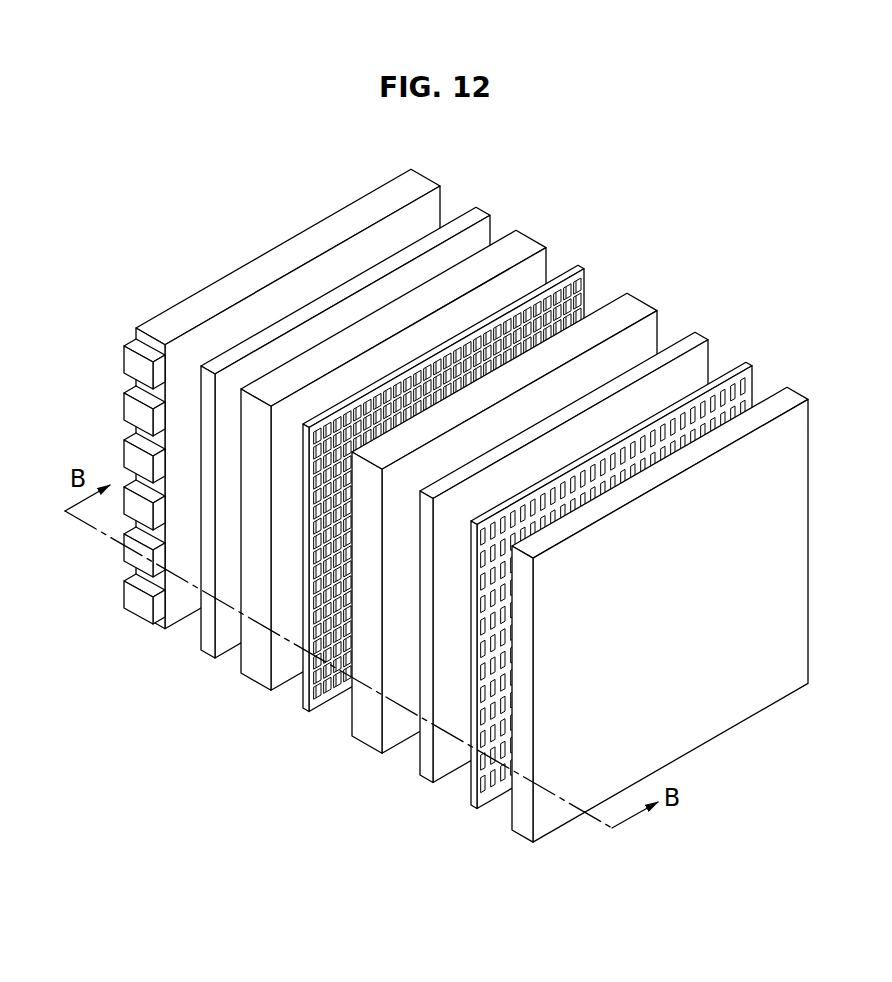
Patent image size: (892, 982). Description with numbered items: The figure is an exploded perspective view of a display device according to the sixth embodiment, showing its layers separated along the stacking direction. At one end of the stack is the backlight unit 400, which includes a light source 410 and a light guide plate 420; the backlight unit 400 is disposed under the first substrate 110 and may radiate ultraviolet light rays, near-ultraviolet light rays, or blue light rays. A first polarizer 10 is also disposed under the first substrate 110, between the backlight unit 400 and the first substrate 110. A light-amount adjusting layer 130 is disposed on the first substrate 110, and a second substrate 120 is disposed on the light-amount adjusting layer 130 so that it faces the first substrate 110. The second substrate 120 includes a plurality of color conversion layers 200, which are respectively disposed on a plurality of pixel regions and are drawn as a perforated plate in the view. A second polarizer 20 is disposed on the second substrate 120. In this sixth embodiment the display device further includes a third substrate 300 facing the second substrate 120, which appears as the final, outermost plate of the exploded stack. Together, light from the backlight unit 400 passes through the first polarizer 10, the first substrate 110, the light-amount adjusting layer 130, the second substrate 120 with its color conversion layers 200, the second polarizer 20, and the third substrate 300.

The first polarizer 10 is at (208, 642).
The second polarizer 20 is at (427, 767).
The first substrate 110 is at (257, 668).
The second substrate 120 is at (363, 730).
The light-amount adjusting layer 130 is at (307, 697).
The color conversion layers 200 is at (475, 798).
The third substrate 300 is at (528, 827).
The backlight unit 400 is at (269, 398).
The light source 410 is at (132, 363).
The light guide plate 420 is at (173, 320).